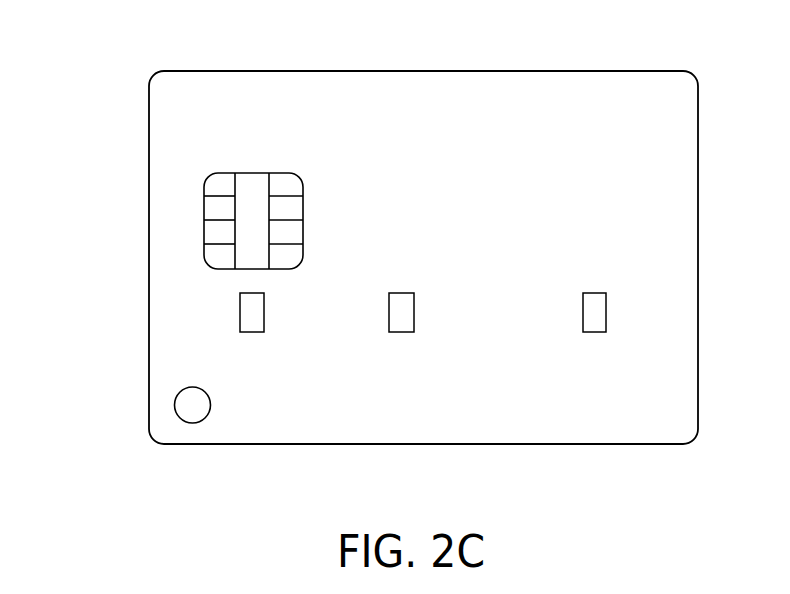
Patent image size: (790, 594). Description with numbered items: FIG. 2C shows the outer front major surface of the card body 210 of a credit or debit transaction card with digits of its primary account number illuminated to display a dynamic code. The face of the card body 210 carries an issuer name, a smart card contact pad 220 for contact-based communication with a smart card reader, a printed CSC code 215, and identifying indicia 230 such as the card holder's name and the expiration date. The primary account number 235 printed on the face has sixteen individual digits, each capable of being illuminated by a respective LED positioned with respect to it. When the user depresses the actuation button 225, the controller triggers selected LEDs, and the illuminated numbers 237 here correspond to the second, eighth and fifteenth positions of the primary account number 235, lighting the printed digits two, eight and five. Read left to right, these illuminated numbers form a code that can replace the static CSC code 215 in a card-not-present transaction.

The card body 210 is at (692, 105).
The CSC code 215 is at (617, 203).
The smart card contact pad 220 is at (406, 98).
The actuation button 225 is at (192, 423).
The identifying indicia 230 is at (404, 375).
The primary account number 235 is at (625, 310).
The illuminated numbers 237 is at (253, 293).